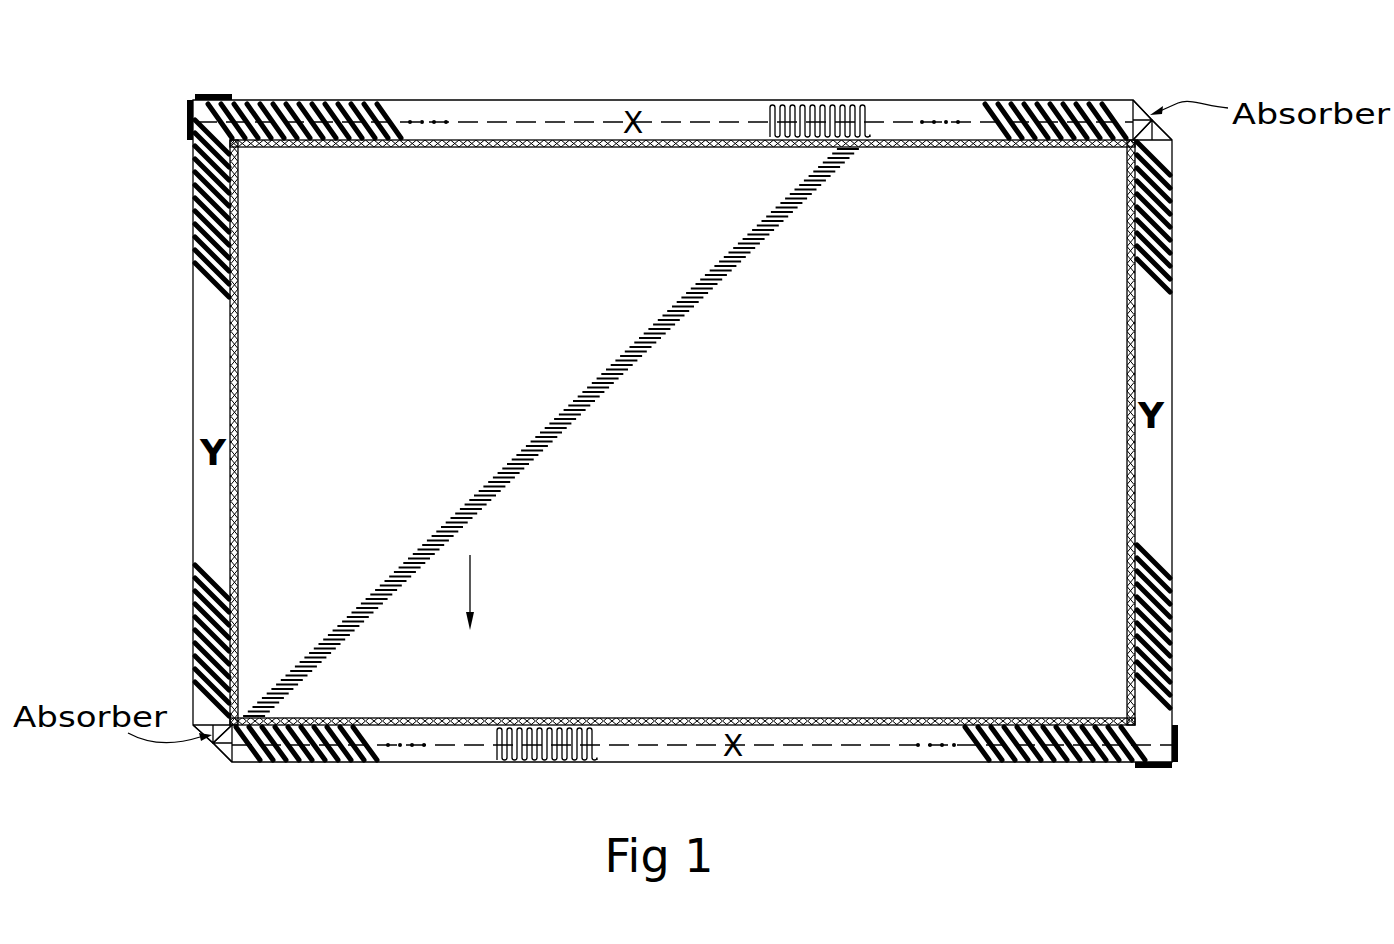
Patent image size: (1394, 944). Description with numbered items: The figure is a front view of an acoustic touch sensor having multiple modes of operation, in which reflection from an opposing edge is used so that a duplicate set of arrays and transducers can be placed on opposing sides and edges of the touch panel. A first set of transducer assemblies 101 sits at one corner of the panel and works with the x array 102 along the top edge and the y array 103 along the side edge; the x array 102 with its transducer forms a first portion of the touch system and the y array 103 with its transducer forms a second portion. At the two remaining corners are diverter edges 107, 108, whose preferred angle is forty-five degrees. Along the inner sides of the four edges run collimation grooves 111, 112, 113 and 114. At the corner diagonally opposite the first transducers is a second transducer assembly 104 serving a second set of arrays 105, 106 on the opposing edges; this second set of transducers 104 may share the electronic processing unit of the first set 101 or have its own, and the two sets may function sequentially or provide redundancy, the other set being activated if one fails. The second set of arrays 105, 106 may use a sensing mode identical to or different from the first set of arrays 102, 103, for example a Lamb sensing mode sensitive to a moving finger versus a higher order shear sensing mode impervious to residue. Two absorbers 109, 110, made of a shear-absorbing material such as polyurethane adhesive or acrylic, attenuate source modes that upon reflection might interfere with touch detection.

The transducer assemblies 101 is at (212, 95).
The x array 102 is at (285, 106).
The y array 103 is at (196, 214).
The transducer assembly 104 is at (1177, 750).
The second set array 105 is at (1060, 760).
The second set array 106 is at (1172, 583).
The diverter edge 107 is at (1143, 113).
The diverter edge 108 is at (218, 752).
The absorber 109 is at (1163, 122).
The absorber 110 is at (212, 745).
The collimation groove 111 is at (540, 147).
The collimation groove 112 is at (236, 400).
The collimation groove 113 is at (852, 722).
The collimation groove 114 is at (1130, 355).